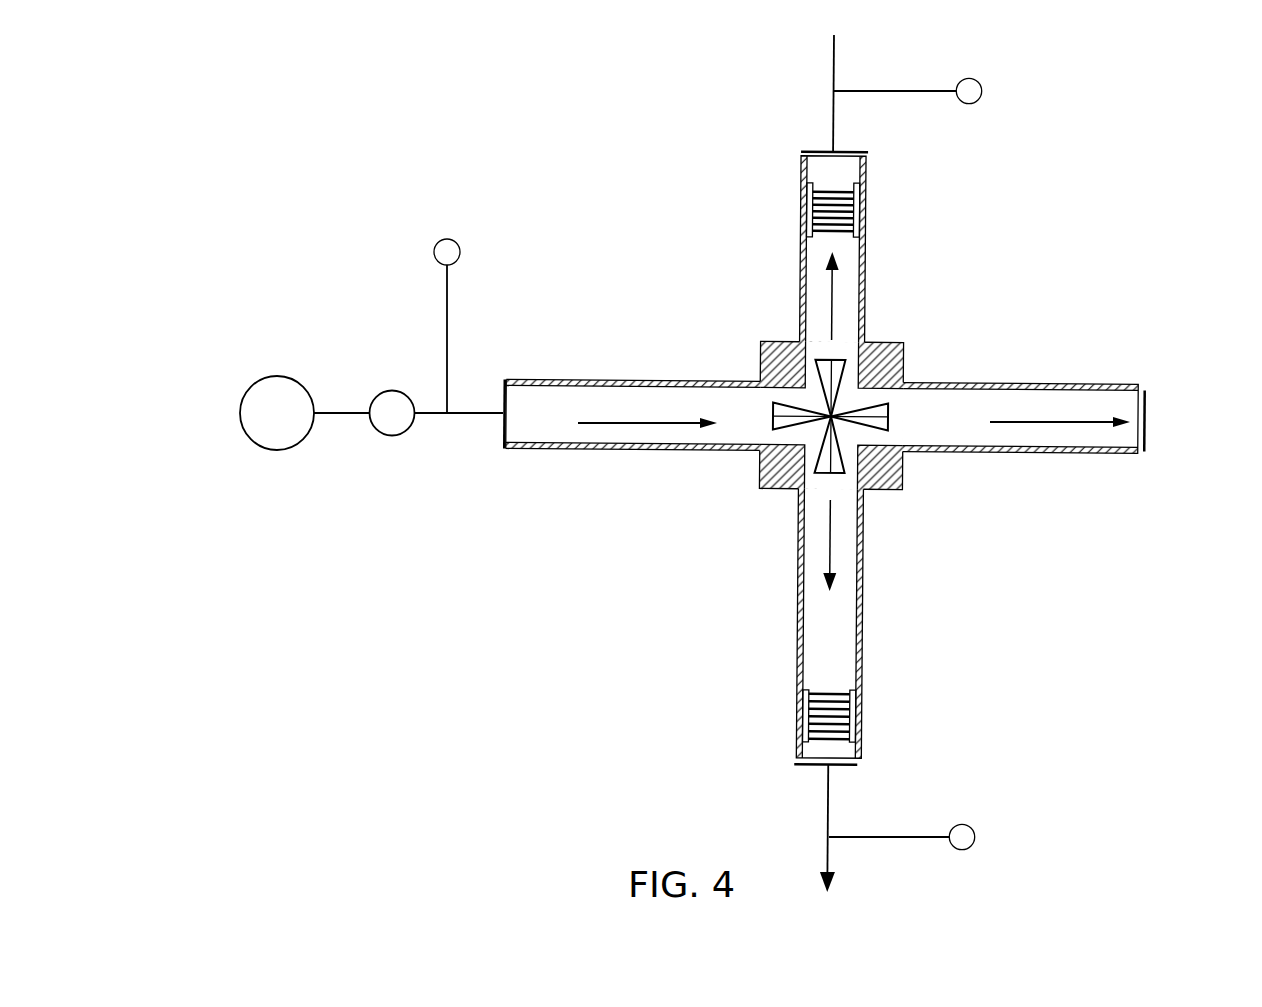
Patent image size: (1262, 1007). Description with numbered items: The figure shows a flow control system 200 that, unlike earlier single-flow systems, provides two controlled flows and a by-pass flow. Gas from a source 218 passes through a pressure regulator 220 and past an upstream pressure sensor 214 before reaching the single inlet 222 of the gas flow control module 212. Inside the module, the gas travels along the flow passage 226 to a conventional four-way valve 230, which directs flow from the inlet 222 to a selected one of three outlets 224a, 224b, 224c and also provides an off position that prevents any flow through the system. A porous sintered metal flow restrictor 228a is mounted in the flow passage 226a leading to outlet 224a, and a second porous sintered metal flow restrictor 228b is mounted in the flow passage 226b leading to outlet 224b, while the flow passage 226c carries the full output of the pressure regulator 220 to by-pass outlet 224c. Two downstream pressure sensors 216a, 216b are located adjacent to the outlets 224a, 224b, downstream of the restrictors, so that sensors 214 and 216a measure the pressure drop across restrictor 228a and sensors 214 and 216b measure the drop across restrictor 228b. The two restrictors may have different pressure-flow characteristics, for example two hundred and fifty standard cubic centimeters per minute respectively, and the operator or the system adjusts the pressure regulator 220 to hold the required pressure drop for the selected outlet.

The flow control system 200 is at (932, 253).
The gas flow control module 212 is at (903, 345).
The upstream pressure sensor 214 is at (460, 252).
The downstream pressure sensor 216a is at (983, 85).
The downstream pressure sensor 216b is at (962, 850).
The fluid source / pump 218 is at (275, 450).
The pressure regulator 220 is at (397, 435).
The inlet 222 is at (517, 423).
The outlet 224a is at (867, 156).
The outlet 224b is at (860, 763).
The outlet 224c is at (1146, 400).
The flow passage 226 is at (658, 390).
The flow passage 226a is at (802, 259).
The flow passage 226b is at (872, 663).
The flow passage 226c is at (1063, 394).
The porous sintered metal flow restrictor 228a is at (825, 202).
The porous sintered metal flow restrictor 228b is at (817, 723).
The four-way valve 230 is at (829, 415).